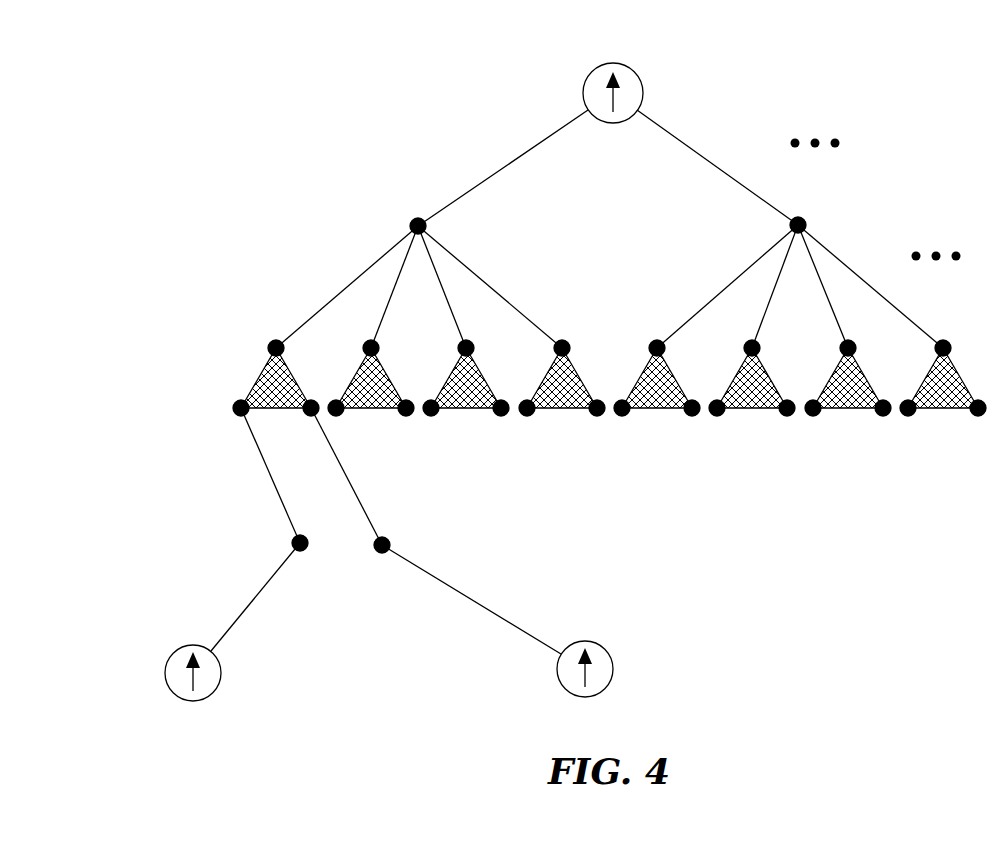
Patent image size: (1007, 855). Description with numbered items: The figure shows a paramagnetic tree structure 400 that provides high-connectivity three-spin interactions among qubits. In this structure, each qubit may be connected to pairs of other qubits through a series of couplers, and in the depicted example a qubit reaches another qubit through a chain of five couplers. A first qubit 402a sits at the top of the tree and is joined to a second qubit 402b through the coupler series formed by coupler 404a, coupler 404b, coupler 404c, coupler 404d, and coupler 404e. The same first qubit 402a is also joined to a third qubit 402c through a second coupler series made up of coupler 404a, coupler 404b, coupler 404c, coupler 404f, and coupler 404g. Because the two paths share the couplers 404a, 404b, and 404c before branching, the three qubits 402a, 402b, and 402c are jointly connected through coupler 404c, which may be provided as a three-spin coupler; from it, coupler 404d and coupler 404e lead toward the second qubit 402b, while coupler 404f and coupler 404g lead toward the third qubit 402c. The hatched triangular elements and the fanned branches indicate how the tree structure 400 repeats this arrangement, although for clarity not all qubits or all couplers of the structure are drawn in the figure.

The paramagnetic tree structure 400 is at (286, 118).
The first qubit 402a is at (630, 67).
The second qubit 402b is at (165, 669).
The third qubit 402c is at (613, 662).
The coupler 404a is at (540, 146).
The coupler 404b is at (368, 270).
The 3-spin coupler 404c is at (256, 386).
The coupler 404d is at (265, 463).
The coupler 404e is at (258, 586).
The coupler 404f is at (353, 490).
The coupler 404g is at (462, 592).